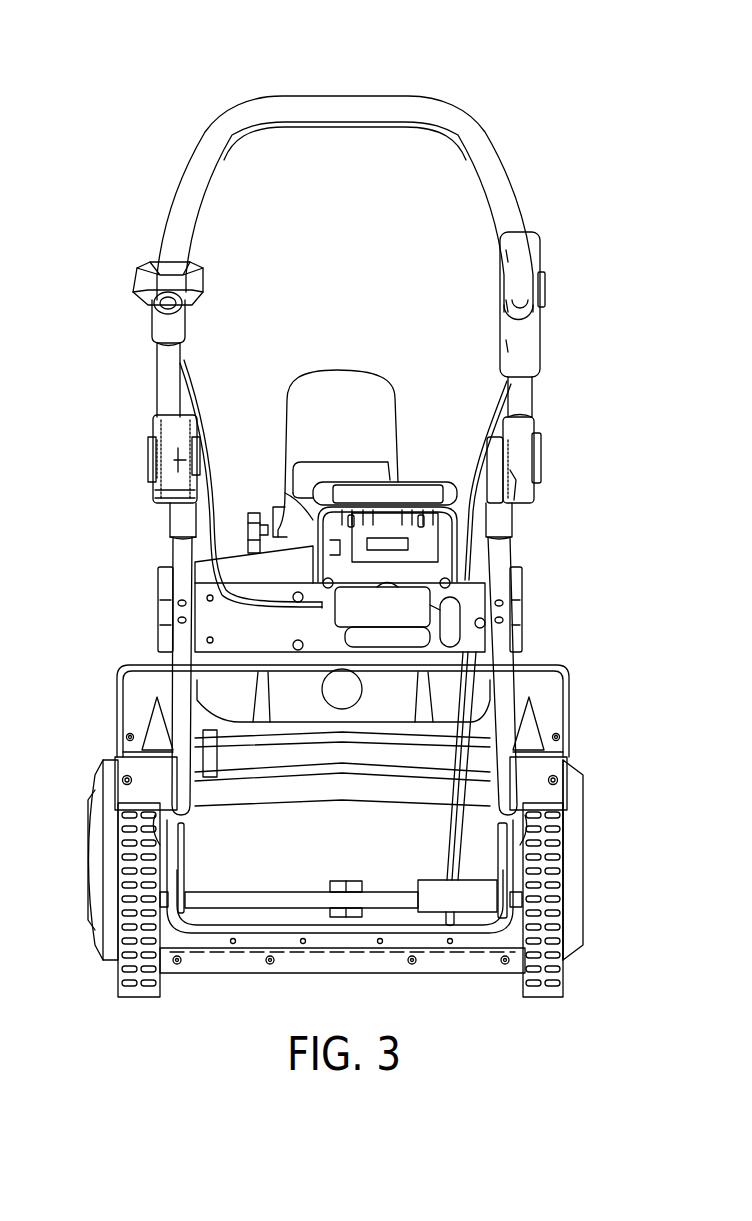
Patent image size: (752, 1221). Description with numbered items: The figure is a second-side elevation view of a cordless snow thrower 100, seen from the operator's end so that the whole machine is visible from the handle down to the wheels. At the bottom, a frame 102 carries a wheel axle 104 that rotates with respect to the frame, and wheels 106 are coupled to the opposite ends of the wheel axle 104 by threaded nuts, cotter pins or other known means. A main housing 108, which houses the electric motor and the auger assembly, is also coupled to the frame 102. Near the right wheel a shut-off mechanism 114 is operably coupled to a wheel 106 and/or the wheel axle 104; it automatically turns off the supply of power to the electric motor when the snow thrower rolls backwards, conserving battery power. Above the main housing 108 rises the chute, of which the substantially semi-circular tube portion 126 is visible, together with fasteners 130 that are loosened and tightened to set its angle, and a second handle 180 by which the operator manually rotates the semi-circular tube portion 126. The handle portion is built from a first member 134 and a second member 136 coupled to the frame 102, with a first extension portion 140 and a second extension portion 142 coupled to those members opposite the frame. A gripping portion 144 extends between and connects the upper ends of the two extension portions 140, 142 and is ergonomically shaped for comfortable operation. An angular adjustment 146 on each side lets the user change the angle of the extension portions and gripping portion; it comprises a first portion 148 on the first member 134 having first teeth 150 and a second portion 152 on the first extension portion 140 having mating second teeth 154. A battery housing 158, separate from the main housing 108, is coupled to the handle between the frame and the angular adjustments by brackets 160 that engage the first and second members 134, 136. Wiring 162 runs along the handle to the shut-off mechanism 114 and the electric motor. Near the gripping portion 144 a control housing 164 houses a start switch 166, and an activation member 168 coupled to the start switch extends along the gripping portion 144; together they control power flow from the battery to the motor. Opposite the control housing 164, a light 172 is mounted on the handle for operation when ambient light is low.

The cordless snow thrower 100 is at (220, 62).
The frame 102 is at (505, 820).
The wheel axle 104 is at (240, 897).
The wheels 106 is at (121, 987).
The main housing 108 is at (135, 702).
The shut-off mechanism 114 is at (425, 880).
The substantially semi-circular tube portion 126 is at (366, 385).
The fasteners 130 is at (253, 514).
The first member 134 is at (180, 652).
The second member 136 is at (500, 655).
The first extension portion 140 is at (168, 388).
The second extension portion 142 is at (524, 395).
The gripping portion 144 is at (386, 98).
The angular adjustment 146 is at (138, 460).
The first portion 148 is at (172, 517).
The first teeth 150 is at (163, 493).
The second portion 152 is at (160, 437).
The second teeth 154 is at (185, 460).
The battery housing 158 is at (443, 530).
The brackets 160 is at (165, 605).
The wiring 162 is at (198, 422).
The control housing 164 is at (538, 241).
The start switch 166 is at (546, 292).
The activation member 168 is at (372, 128).
The light 172 is at (140, 283).
The second handle 180 is at (380, 472).